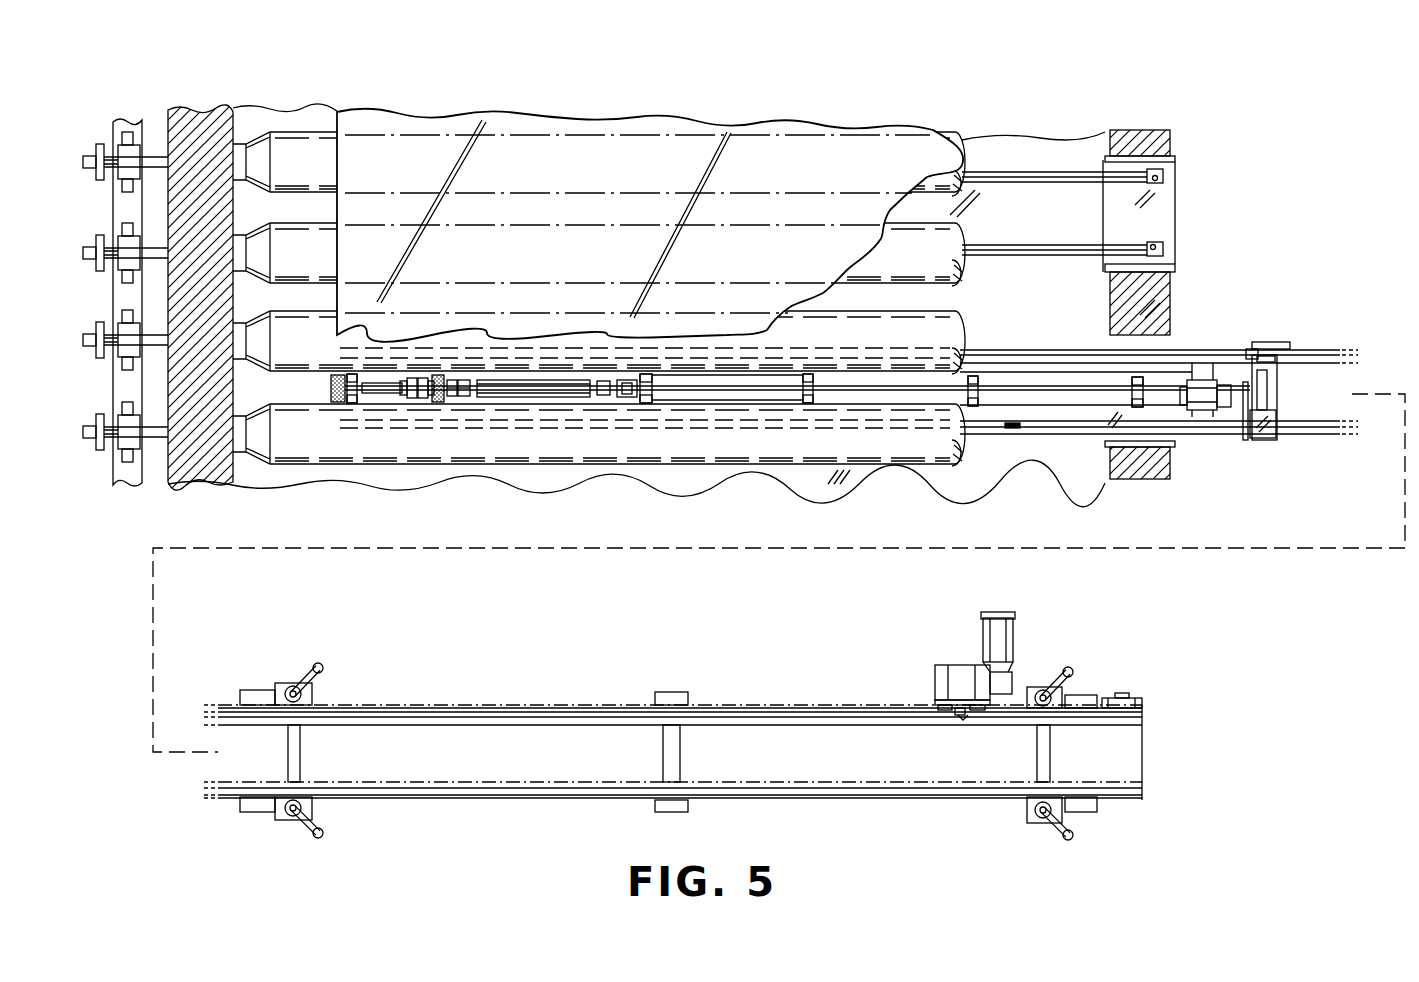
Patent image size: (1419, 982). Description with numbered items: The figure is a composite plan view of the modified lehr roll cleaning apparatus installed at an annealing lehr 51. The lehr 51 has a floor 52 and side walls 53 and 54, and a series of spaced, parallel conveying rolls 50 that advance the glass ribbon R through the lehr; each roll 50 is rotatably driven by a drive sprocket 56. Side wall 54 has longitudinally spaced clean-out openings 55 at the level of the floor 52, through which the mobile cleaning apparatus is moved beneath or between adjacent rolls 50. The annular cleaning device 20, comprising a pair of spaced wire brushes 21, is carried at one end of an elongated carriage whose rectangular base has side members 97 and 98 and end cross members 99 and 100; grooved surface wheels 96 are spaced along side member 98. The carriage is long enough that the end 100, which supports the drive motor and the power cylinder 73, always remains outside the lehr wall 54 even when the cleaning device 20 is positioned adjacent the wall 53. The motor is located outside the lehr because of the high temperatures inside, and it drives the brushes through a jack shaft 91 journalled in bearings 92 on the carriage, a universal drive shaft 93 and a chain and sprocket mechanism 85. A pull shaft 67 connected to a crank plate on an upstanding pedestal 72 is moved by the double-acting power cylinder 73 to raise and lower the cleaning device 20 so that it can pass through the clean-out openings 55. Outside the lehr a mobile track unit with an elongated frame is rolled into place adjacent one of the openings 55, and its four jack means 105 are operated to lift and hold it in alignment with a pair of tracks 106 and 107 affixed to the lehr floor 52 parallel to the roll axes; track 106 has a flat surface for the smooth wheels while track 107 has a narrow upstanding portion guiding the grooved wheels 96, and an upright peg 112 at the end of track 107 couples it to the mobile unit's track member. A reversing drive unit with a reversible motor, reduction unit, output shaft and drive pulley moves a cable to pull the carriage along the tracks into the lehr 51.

The glass ribbon R is at (708, 125).
The annular cleaning device 20 is at (380, 399).
The wire brushes 21 is at (338, 392).
The conveying rolls 50 is at (295, 227).
The annealing lehr 51 is at (1160, 118).
The floor 52 is at (808, 487).
The side wall 53 is at (193, 120).
The side wall 54 is at (1168, 143).
The clean-out openings 55 is at (1168, 265).
The drive sprocket 56 is at (97, 173).
The pull shaft 67 is at (1070, 423).
The pedestal 72 is at (1240, 440).
The power cylinder 73 is at (1270, 430).
The chain and sprocket mechanism 85 is at (411, 366).
The jack shaft 91 is at (1033, 393).
The bearings 92 is at (645, 392).
The universal drive shaft 93 is at (520, 378).
The grooved surface wheels 96 is at (1133, 388).
The side member 97 is at (1030, 363).
The side member 98 is at (1030, 422).
The end cross member 99 is at (341, 405).
The end cross member 100 is at (1272, 383).
The jack means 105 is at (322, 665).
The track 106 is at (1025, 173).
The track 107 is at (1000, 246).
The peg 112 is at (1156, 247).